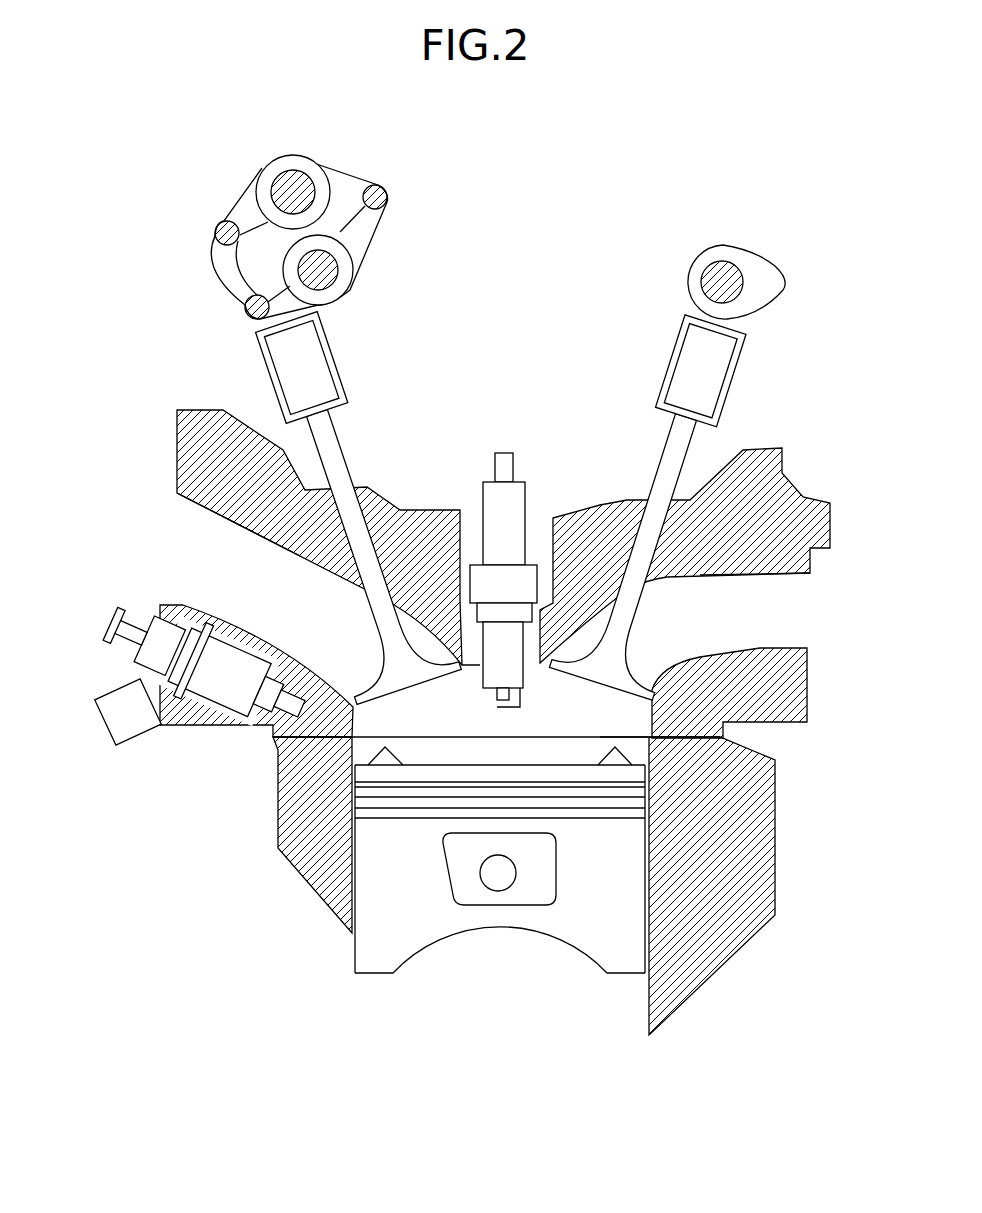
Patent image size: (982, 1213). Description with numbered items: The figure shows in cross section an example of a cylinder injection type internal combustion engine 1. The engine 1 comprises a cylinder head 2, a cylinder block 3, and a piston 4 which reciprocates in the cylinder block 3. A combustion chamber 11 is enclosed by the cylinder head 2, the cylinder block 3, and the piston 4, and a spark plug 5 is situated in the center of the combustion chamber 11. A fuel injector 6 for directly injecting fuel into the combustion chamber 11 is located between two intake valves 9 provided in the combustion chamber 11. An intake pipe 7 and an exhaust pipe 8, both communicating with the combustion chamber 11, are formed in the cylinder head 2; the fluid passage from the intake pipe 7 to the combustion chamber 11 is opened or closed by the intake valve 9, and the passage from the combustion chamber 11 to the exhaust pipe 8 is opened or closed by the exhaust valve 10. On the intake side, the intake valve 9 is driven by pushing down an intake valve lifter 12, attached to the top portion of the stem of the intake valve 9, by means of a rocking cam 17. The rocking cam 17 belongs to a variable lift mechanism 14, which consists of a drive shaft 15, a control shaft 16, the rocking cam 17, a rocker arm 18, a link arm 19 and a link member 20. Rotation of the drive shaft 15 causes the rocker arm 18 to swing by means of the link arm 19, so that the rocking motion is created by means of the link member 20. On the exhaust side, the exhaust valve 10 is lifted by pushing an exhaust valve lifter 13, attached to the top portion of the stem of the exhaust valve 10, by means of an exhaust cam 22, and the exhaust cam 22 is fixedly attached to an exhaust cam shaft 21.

The cylinder injection type internal combustion engine 1 is at (266, 903).
The cylinder head 2 is at (792, 660).
The cylinder block 3 is at (758, 828).
The piston 4 is at (500, 918).
The spark plug 5 is at (527, 502).
The fuel injector 6 is at (224, 695).
The intake pipe 7 is at (227, 577).
The exhaust pipe 8 is at (767, 622).
The intake valve 9 is at (383, 650).
The exhaust valve 10 is at (620, 652).
The combustion chamber 11 is at (600, 728).
The intake valve lifter 12 is at (263, 350).
The exhaust valve lifter 13 is at (733, 377).
The variable lift mechanism 14 is at (150, 238).
The drive shaft 15 is at (340, 279).
The control shaft 16 is at (272, 164).
The rocking cam 17 is at (307, 303).
The rocker arm 18 is at (240, 206).
The link arm 19 is at (370, 237).
The link member 20 is at (222, 272).
The exhaust cam shaft 21 is at (707, 263).
The exhaust cam 22 is at (773, 270).